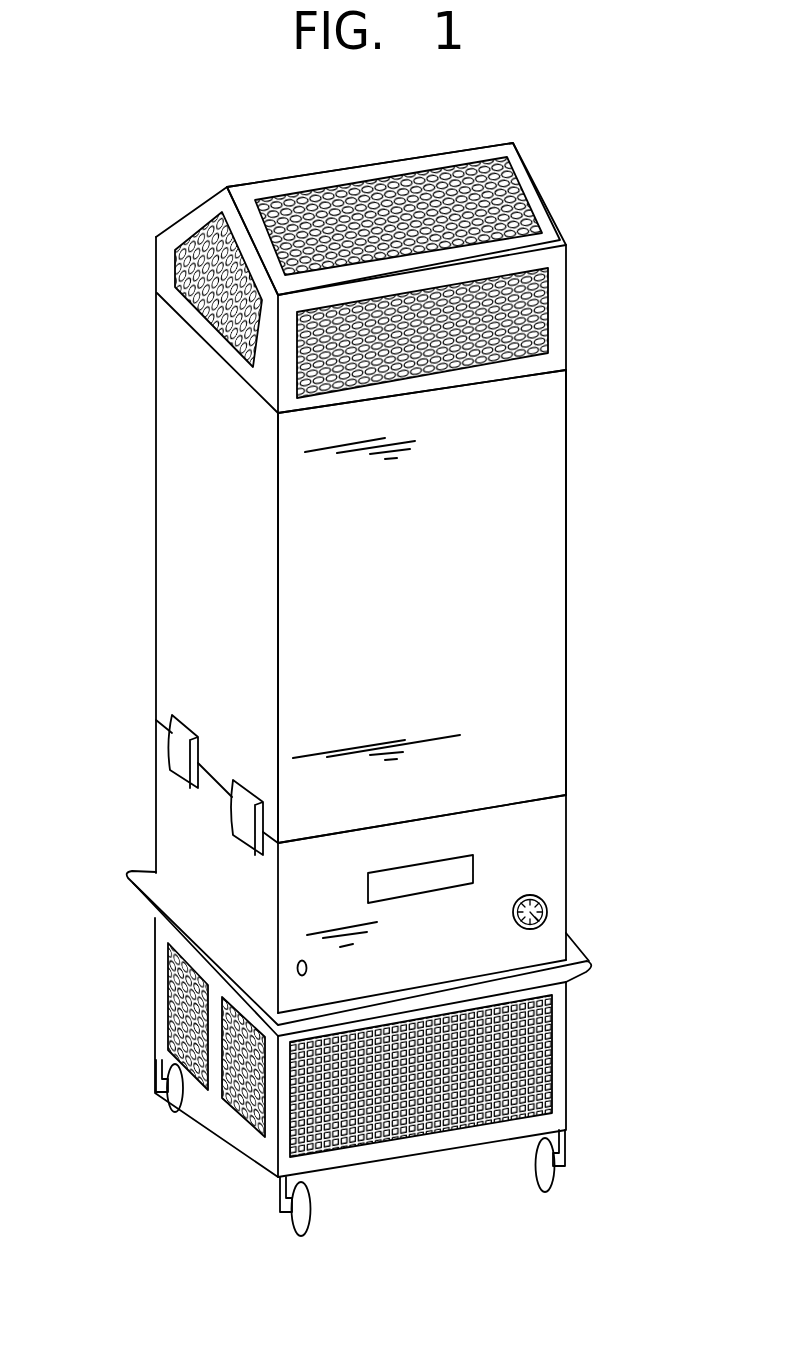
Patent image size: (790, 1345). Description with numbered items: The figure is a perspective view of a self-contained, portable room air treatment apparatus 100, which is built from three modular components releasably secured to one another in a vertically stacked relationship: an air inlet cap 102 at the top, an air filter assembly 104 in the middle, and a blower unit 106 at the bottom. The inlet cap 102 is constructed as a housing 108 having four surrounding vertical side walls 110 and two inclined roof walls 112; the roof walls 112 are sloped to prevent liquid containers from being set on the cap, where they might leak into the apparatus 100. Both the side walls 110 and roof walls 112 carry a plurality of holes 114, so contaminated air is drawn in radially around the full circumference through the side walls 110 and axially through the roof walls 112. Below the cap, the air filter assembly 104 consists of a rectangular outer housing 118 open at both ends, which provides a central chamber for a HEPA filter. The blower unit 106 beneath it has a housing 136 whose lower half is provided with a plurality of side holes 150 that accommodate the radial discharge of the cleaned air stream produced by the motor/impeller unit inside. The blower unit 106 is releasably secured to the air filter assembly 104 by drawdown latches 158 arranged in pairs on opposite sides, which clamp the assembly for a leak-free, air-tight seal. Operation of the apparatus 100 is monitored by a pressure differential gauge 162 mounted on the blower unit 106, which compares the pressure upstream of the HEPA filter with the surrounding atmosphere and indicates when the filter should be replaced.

The self-contained, portable room air treatment apparatus 100 is at (644, 404).
The air inlet cap 102 is at (572, 304).
The air filter assembly 104 is at (572, 691).
The blower unit 106 is at (572, 852).
The housing 108 is at (548, 206).
The vertical side walls 110 is at (286, 356).
The inclined roof walls 112 is at (512, 166).
The holes 114 is at (325, 192).
The rectangular outer housing 118 is at (510, 551).
The housing 136 is at (285, 1113).
The side holes 150 is at (503, 1062).
The drawdown latches 158 is at (243, 817).
The pressure differential gauge 162 is at (548, 918).